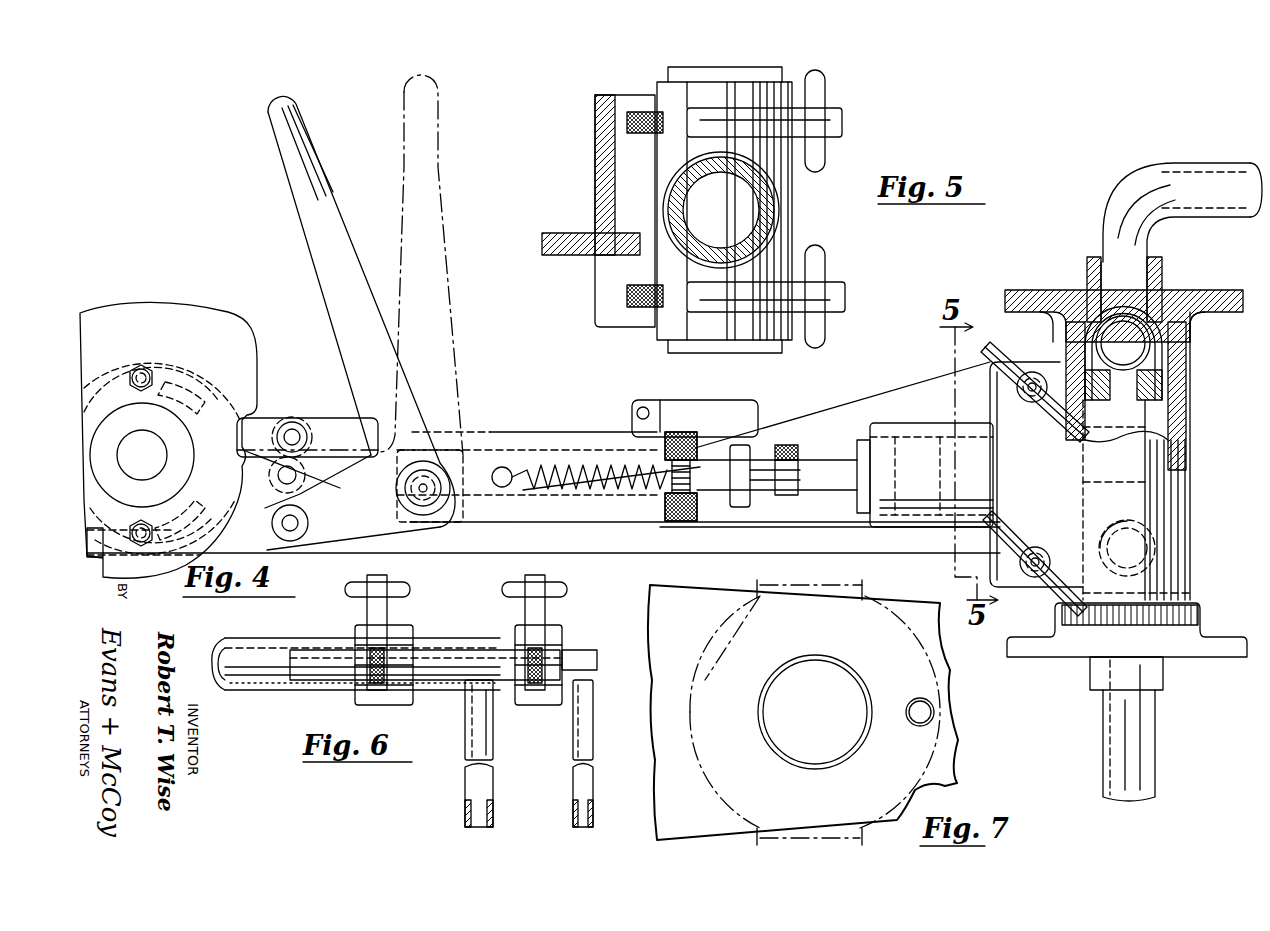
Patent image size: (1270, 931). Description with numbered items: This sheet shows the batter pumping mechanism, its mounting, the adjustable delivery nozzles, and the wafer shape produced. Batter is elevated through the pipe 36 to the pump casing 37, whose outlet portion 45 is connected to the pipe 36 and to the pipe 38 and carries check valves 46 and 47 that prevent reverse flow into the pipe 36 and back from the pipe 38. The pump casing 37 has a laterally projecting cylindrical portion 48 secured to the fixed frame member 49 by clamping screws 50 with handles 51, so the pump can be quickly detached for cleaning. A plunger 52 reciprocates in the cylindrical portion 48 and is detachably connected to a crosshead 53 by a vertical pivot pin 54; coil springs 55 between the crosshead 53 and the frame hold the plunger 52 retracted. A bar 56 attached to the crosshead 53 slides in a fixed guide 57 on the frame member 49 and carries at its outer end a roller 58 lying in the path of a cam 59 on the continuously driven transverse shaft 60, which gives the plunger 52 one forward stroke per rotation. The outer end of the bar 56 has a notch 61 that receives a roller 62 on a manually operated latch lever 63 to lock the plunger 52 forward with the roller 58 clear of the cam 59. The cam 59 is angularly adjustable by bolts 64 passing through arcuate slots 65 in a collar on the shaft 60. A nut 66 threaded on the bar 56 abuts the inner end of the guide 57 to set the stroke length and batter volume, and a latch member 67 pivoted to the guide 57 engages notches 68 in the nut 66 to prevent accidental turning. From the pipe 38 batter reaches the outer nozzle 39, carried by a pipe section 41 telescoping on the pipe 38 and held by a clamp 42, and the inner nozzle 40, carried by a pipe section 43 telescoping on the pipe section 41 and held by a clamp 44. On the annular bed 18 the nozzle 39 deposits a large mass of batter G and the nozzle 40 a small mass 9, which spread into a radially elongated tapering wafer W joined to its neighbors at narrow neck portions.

In FIG. 4, the pipe 36 is at (1098, 733).
In FIG. 4, the pump casing 37 is at (1190, 470).
In FIG. 4, the pipe 38 is at (1190, 160).
In FIG. 6, the pipe 38 is at (262, 648).
In FIG. 6, the outer nozzle 39 is at (493, 782).
In FIG. 6, the inner nozzle 40 is at (593, 790).
In FIG. 6, the pipe section 41 is at (455, 650).
In FIG. 6, the clamp 42 is at (352, 640).
In FIG. 6, the pipe section 43 is at (588, 652).
In FIG. 6, the clamp 44 is at (560, 635).
In FIG. 4, the outlet portion 45 is at (1188, 432).
In FIG. 4, the check valve 46 is at (1120, 520).
In FIG. 4, the check valve 47 is at (1123, 354).
In FIG. 4, the cylindrical portion 48 is at (920, 423).
In FIG. 5, the cylindrical portion 48 is at (736, 173).
In FIG. 4, the fixed frame member 49 is at (890, 545).
In FIG. 5, the fixed frame member 49 is at (595, 184).
In FIG. 4, the clamping screws 50 is at (1032, 372).
In FIG. 5, the clamping screws 50 is at (845, 108).
In FIG. 5, the handles 51 is at (830, 160).
In FIG. 4, the plunger 52 is at (860, 440).
In FIG. 4, the crosshead 53 is at (745, 445).
In FIG. 4, the vertical pivot pin 54 is at (795, 448).
In FIG. 4, the coil springs 55 is at (598, 455).
In FIG. 4, the bar 56 is at (478, 445).
In FIG. 4, the fixed guide 57 is at (562, 432).
In FIG. 4, the roller 58 is at (294, 420).
In FIG. 4, the cam 59 is at (183, 305).
In FIG. 4, the transverse shaft 60 is at (135, 462).
In FIG. 4, the notch 61 is at (262, 480).
In FIG. 4, the roller 62 is at (300, 498).
In FIG. 4, the latch lever 63 is at (292, 205).
In FIG. 4, the bolts 64 is at (137, 368).
In FIG. 4, the arcuate slots 65 is at (195, 372).
In FIG. 4, the nut 66 is at (680, 522).
In FIG. 4, the latch member 67 is at (705, 400).
In FIG. 4, the notches 68 is at (690, 430).
In FIG. 7, the annular bed 18 is at (685, 640).
In FIG. 7, the small mass of batter 9 is at (915, 705).
In FIG. 7, the large mass of batter G is at (802, 660).
In FIG. 7, the wafer W is at (735, 800).